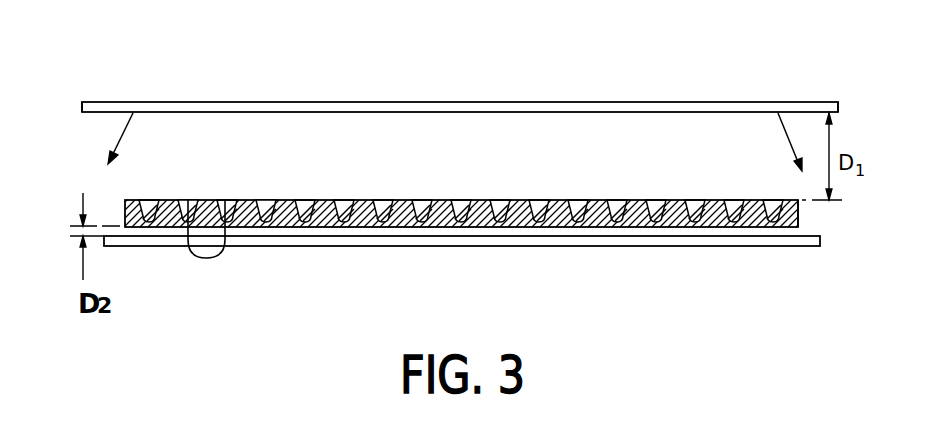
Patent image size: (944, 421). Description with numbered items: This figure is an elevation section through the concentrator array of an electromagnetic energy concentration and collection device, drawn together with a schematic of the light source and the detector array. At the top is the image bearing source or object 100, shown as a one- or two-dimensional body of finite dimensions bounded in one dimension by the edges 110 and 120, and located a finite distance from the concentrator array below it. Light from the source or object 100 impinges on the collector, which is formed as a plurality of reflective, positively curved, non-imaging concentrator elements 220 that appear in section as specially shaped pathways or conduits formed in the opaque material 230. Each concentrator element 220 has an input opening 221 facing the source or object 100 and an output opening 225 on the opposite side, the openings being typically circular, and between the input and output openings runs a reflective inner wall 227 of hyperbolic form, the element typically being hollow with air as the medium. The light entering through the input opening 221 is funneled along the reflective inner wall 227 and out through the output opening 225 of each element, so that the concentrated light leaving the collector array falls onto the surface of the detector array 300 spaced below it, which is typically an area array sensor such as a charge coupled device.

The image bearing source or object 100 is at (678, 101).
The edge 110 is at (82, 106).
The edge 120 is at (840, 102).
The concentrator element 220 is at (690, 199).
The input opening 221 is at (185, 199).
The output opening 225 is at (225, 199).
The reflective inner wall 227 is at (267, 199).
The opaque material 230 is at (800, 210).
The detector array 300 is at (775, 247).